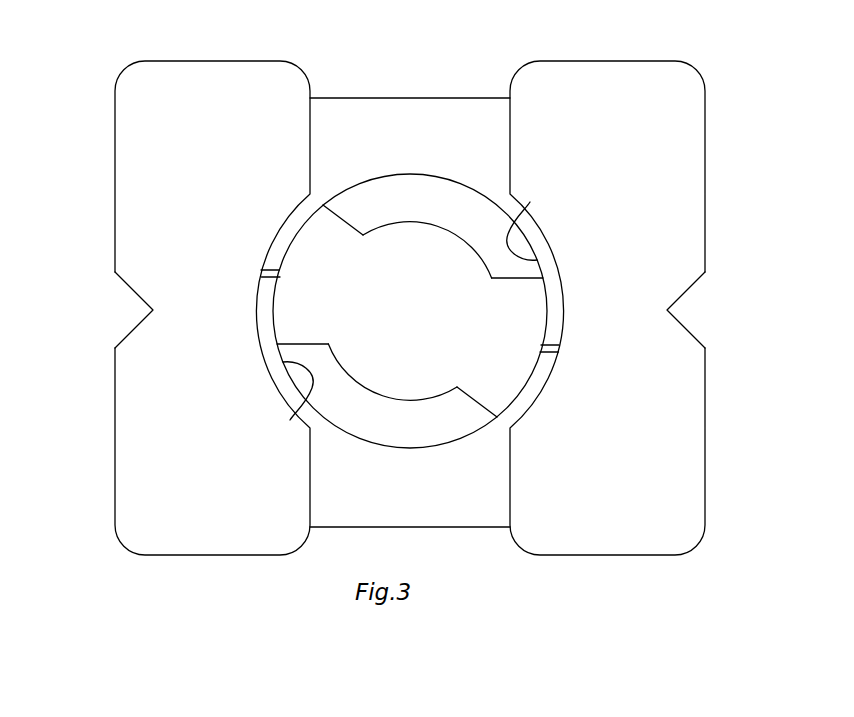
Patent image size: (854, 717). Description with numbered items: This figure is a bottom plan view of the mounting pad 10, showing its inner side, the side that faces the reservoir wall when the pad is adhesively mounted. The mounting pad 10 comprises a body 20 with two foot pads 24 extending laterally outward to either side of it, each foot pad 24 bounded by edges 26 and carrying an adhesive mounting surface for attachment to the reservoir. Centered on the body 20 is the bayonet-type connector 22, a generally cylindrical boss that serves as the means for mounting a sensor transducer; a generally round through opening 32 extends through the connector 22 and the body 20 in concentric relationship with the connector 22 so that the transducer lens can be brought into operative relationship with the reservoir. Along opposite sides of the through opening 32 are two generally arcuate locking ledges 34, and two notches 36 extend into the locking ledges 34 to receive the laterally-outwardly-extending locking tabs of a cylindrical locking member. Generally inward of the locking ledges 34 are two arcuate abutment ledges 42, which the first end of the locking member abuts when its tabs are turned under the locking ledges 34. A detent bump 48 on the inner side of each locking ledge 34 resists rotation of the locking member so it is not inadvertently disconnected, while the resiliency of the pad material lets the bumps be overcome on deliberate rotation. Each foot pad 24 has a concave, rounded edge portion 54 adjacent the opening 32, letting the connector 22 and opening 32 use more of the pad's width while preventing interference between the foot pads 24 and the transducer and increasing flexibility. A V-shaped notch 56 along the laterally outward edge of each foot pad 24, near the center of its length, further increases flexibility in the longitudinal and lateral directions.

The mounting pad 10 is at (197, 601).
The body 20 is at (364, 97).
The bayonet-type connector 22 is at (547, 303).
The foot pad 24 is at (218, 56).
The edges 26 is at (708, 150).
The through opening 32 is at (425, 271).
The locking ledges 34 is at (290, 327).
The notches 36 is at (297, 232).
The abutment ledges 42 is at (412, 224).
The detent bump 48 is at (290, 277).
The rounded edge portion 54 is at (283, 362).
The V-shaped notch 56 is at (128, 335).